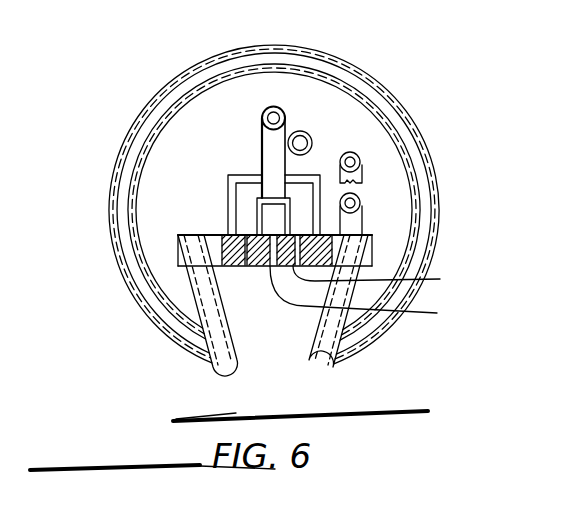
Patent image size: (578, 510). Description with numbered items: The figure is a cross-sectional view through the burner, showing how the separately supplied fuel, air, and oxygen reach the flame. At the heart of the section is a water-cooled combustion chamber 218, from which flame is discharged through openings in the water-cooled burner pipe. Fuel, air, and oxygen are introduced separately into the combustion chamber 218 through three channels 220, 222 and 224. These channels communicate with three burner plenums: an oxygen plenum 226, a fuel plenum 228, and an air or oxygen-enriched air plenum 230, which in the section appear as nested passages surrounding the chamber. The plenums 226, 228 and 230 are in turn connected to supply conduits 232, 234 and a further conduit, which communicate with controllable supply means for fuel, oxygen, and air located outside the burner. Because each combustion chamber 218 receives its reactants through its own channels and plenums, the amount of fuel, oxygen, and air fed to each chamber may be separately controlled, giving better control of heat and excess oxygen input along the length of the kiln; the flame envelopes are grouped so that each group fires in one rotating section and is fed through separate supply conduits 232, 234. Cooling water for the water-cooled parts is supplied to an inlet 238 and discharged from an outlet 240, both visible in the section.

The combustion chamber 218 is at (298, 375).
The channel 220 is at (378, 297).
The channel 222 is at (389, 282).
The channel 224 is at (200, 336).
The oxygen plenum 226 is at (256, 209).
The fuel plenum 228 is at (303, 223).
The air or oxygen-enriched air plenum 230 is at (207, 104).
The supply conduit 232 is at (282, 110).
The supply conduit 234 is at (311, 133).
The cooling water inlet 238 is at (360, 162).
The cooling water outlet 240 is at (360, 202).